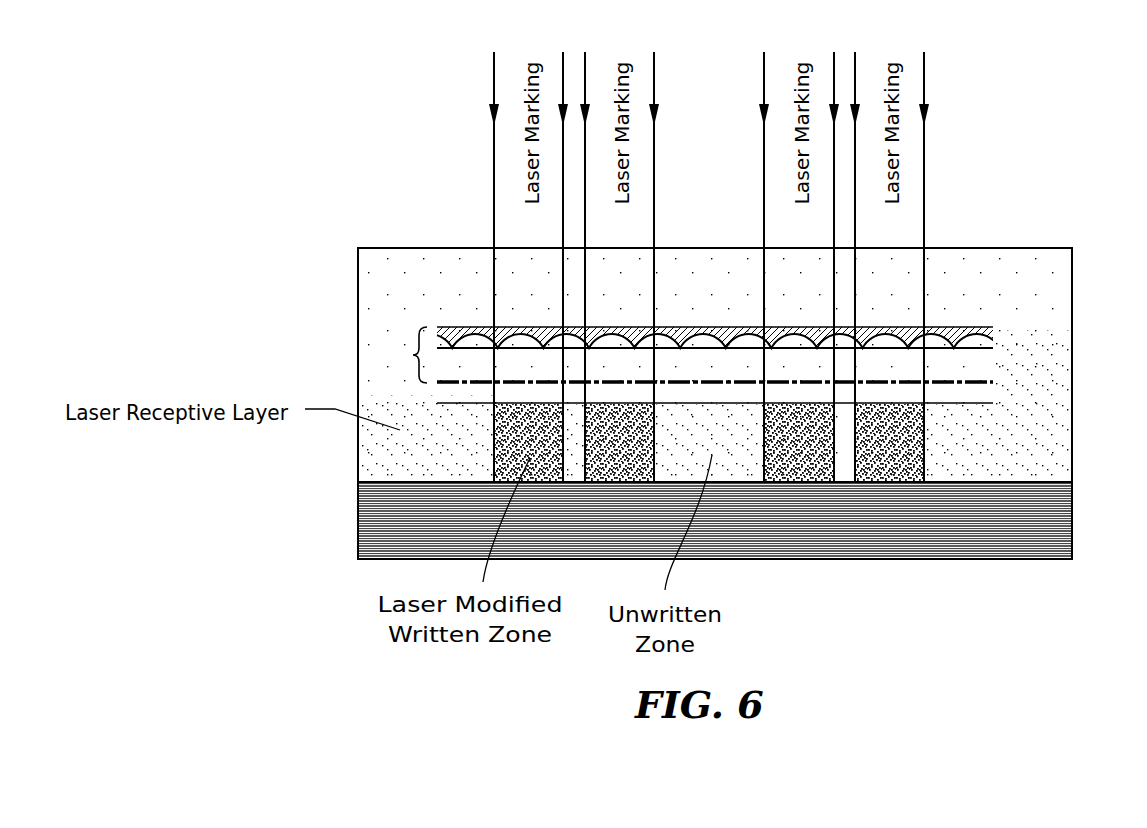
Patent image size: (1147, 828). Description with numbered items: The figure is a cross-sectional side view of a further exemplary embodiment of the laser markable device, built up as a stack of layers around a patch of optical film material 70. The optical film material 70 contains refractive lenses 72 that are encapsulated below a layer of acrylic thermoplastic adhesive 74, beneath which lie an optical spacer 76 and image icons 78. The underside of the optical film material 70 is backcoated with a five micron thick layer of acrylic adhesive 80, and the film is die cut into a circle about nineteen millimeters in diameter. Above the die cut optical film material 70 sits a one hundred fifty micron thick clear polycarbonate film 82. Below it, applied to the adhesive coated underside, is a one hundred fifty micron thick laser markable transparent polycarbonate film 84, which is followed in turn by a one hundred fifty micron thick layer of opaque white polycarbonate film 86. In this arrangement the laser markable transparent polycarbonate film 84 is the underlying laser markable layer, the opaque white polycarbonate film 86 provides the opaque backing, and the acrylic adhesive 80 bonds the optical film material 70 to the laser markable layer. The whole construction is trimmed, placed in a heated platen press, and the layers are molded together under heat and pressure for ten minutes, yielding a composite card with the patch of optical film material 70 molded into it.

The optical film material 70 is at (413, 355).
The refractive lenses 72 is at (516, 343).
The acrylic thermoplastic adhesive 74 is at (460, 328).
The optical spacer 76 is at (698, 368).
The image icons 78 is at (527, 383).
The acrylic adhesive 80 is at (958, 394).
The clear polycarbonate film 82 is at (961, 279).
The laser markable transparent polycarbonate film 84 is at (1043, 447).
The opaque white polycarbonate film 86 is at (777, 528).